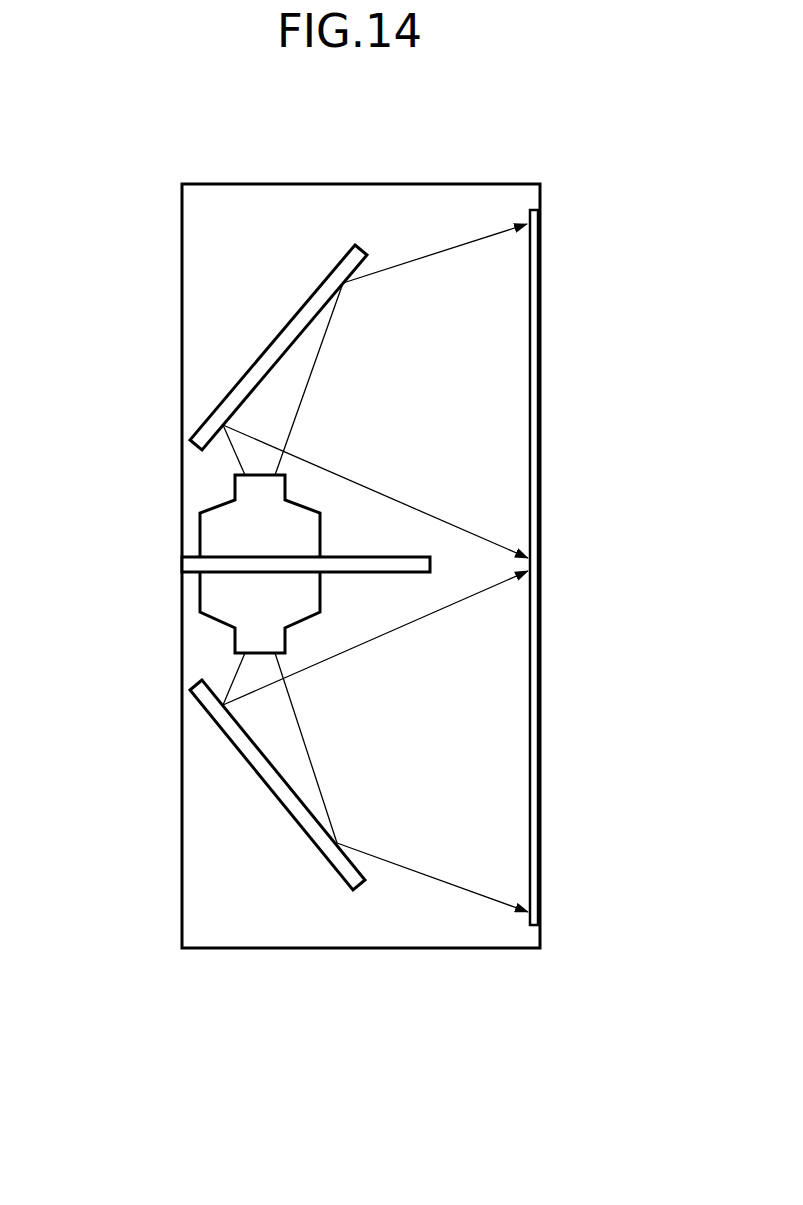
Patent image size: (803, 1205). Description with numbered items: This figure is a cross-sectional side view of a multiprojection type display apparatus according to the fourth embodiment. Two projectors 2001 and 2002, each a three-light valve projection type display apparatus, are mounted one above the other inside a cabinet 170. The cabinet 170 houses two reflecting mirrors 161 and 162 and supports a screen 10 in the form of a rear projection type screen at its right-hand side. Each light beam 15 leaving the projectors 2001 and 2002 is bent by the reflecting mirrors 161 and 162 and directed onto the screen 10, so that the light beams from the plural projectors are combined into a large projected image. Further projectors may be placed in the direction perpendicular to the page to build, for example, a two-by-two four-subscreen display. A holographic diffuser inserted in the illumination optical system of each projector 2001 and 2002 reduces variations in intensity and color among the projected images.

The screen 10 is at (542, 845).
The light beam 15 is at (419, 257).
The reflecting mirror 161 is at (257, 363).
The reflecting mirror 162 is at (243, 758).
The cabinet 170 is at (425, 948).
The projector 2001 is at (208, 588).
The projector 2002 is at (208, 530).